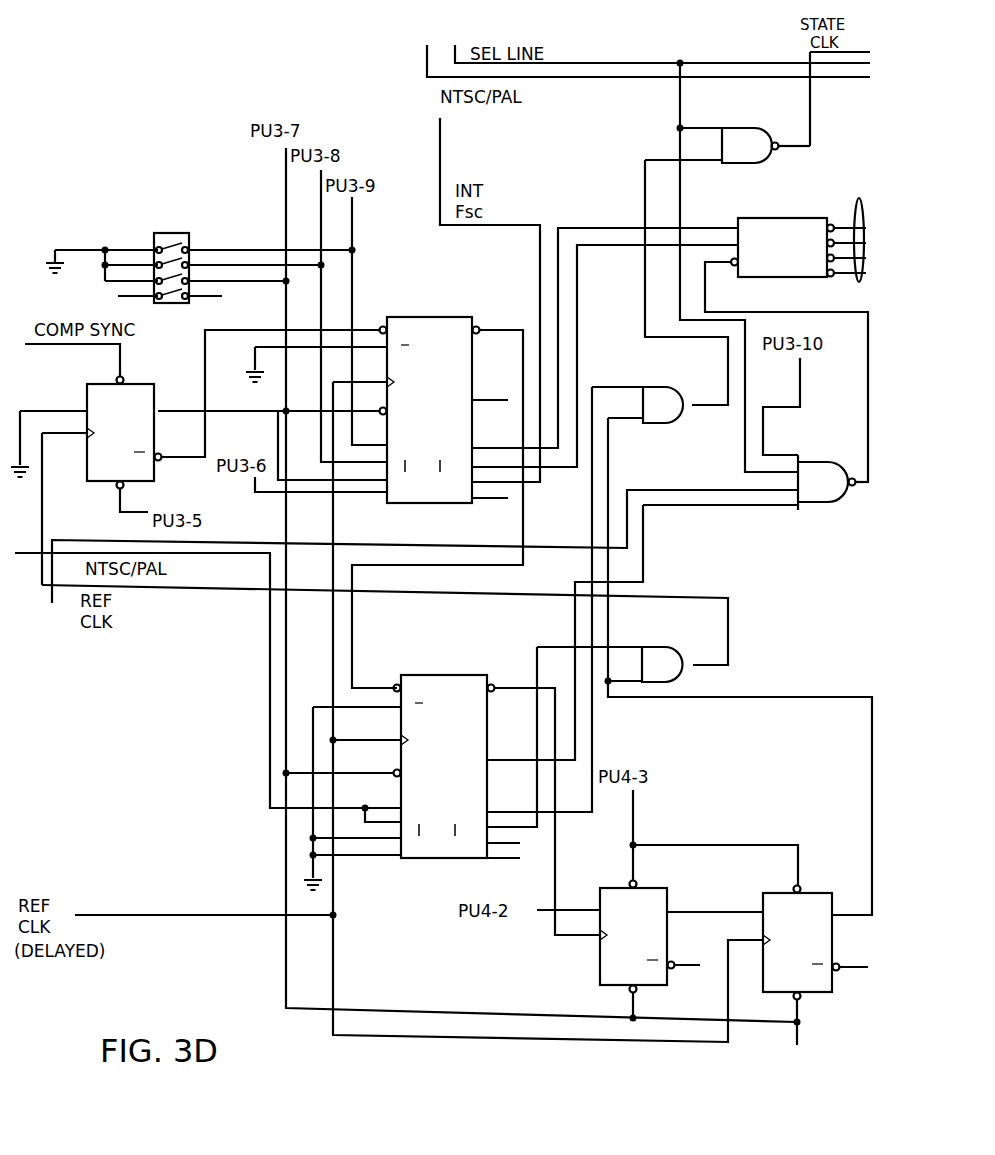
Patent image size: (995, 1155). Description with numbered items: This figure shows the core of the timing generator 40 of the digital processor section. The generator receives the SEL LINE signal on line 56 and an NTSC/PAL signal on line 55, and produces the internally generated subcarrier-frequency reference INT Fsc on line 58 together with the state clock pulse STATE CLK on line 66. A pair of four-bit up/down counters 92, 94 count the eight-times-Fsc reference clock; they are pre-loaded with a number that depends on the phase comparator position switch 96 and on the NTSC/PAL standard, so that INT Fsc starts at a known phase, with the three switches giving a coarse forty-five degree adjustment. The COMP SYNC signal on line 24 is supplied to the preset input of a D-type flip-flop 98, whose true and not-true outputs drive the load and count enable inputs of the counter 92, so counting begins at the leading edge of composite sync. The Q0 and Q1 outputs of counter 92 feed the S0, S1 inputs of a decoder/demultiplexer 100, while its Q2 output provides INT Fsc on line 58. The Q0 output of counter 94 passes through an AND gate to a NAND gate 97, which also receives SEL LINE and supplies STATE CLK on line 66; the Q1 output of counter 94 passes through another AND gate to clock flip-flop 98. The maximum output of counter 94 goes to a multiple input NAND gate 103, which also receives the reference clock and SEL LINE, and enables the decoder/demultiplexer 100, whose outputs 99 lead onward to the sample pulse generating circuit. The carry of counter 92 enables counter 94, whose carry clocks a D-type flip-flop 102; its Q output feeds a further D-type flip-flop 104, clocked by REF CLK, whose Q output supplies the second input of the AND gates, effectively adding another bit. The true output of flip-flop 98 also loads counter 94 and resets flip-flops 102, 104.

The line carrying COMP SYNC 24 is at (45, 347).
The timing generator 40 is at (262, 678).
The line carrying NTSC/PAL signal 55 is at (608, 78).
The line carrying SEL LINE signal 56 is at (655, 62).
The line carrying INT Fsc 58 is at (443, 165).
The line carrying STATE CLK 66 is at (815, 50).
The four bit up/down counter 92 is at (455, 317).
The four bit up/down counter 94 is at (465, 675).
The phase comparator position switch 96 is at (179, 233).
The NAND gate 97 is at (772, 163).
The D-type flip-flop 98 is at (146, 384).
The decoder output lines 99 is at (860, 200).
The decoder/demultiplexer 100 is at (738, 218).
The D-type flip-flop 102 is at (656, 887).
The multiple input NAND gate 103 is at (828, 498).
The D-type flip-flop 104 is at (822, 890).